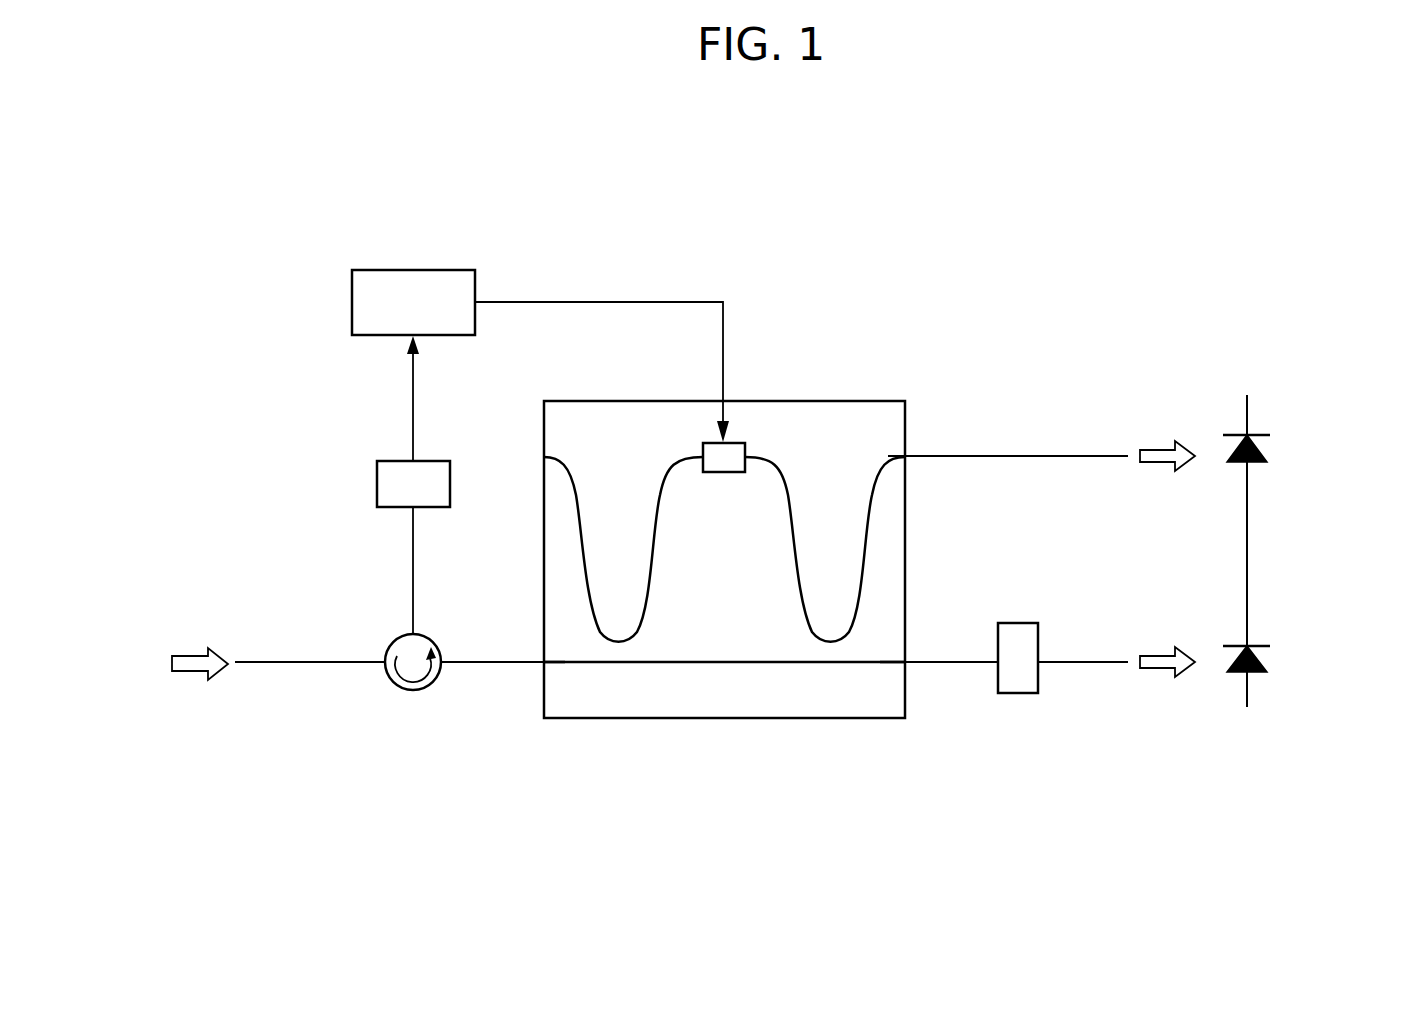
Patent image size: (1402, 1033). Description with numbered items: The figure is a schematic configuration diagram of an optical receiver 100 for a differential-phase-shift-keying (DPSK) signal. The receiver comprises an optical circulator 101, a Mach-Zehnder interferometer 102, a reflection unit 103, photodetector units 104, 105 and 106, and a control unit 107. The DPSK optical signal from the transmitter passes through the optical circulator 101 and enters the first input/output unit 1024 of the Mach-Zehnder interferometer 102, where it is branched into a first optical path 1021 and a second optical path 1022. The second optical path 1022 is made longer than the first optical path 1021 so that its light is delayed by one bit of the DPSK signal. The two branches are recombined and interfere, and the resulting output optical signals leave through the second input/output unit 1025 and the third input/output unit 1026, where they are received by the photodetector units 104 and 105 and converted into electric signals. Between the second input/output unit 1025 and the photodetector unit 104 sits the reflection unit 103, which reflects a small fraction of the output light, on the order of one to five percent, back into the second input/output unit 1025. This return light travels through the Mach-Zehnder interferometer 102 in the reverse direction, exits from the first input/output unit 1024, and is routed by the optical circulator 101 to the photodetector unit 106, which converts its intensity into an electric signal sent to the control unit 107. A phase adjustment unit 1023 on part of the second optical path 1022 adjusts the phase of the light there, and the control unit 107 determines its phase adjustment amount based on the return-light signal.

The optical receiver 100 is at (955, 172).
The optical circulator 101 is at (433, 640).
The Mach-Zehnder interferometer 102 is at (662, 718).
The first optical path 1021 is at (723, 666).
The second optical path 1022 is at (797, 513).
The phase adjustment unit 1023 is at (745, 450).
The first input/output unit 1024 is at (557, 666).
The second input/output unit 1025 is at (873, 664).
The third input/output unit 1026 is at (890, 457).
The reflection unit 103 is at (1018, 694).
The photodetector unit 104 is at (1268, 654).
The photodetector unit 105 is at (1268, 445).
The photodetector unit 106 is at (435, 461).
The control unit 107 is at (435, 270).